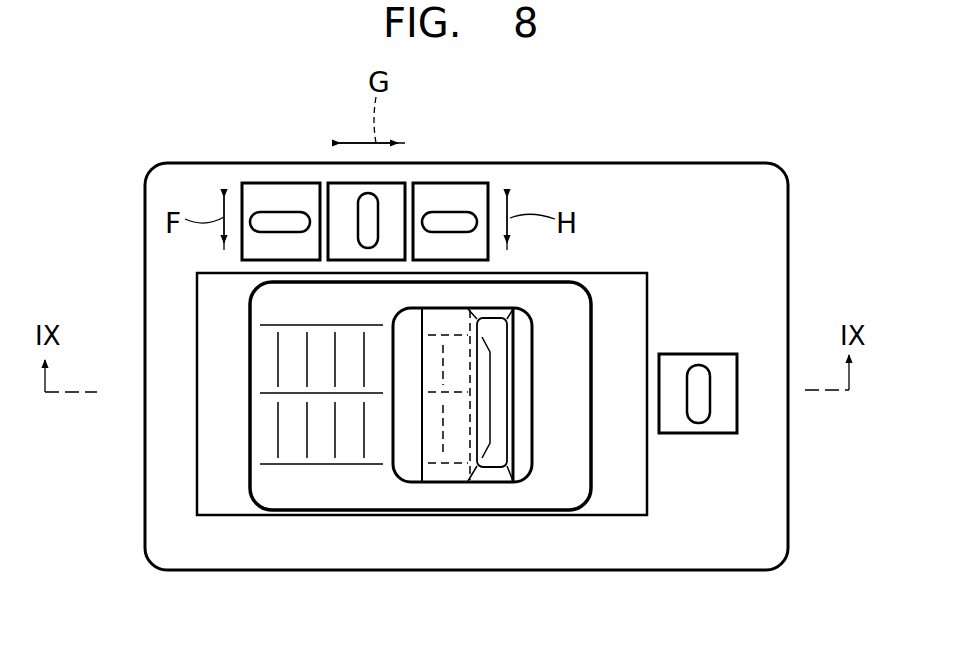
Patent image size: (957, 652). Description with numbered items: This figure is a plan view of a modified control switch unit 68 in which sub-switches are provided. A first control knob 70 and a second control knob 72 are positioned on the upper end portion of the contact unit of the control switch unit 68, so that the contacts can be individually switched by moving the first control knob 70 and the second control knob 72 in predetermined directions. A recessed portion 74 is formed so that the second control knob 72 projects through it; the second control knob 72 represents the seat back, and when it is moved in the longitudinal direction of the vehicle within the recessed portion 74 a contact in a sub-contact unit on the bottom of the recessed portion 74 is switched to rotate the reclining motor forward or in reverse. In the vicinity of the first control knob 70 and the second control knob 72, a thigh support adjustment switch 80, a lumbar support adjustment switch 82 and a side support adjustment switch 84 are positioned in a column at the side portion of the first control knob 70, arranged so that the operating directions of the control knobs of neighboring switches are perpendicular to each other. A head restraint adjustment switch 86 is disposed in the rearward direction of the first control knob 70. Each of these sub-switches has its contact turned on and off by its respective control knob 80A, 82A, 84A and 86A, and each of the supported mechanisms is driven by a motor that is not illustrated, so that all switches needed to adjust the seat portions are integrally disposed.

The control switch unit 68 is at (135, 127).
The first control knob 70 is at (347, 516).
The second control knob 72 is at (519, 461).
The recessed portion 74 is at (521, 340).
The thigh support adjustment switch 80 is at (301, 182).
The control knob 80A is at (275, 209).
The lumbar support adjustment switch 82 is at (353, 259).
The control knob 82A is at (380, 195).
The side support adjustment switch 84 is at (460, 244).
The control knob 84A is at (455, 210).
The head restraint adjustment switch 86 is at (739, 398).
The control knob 86A is at (703, 362).